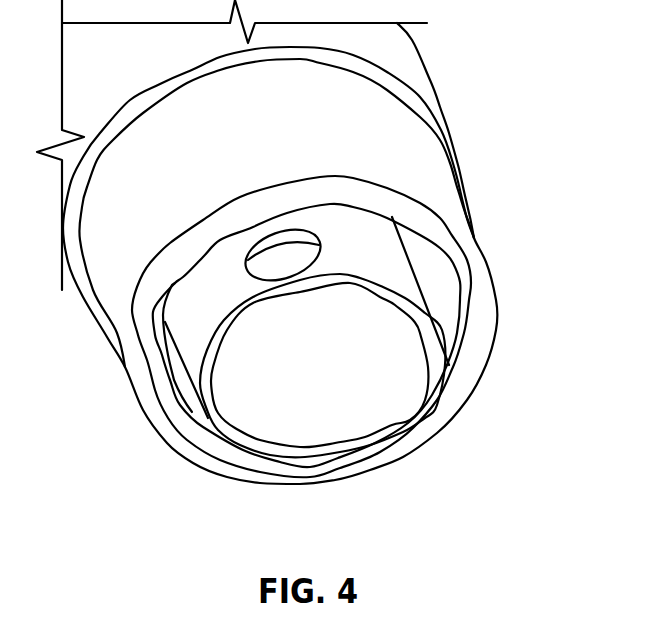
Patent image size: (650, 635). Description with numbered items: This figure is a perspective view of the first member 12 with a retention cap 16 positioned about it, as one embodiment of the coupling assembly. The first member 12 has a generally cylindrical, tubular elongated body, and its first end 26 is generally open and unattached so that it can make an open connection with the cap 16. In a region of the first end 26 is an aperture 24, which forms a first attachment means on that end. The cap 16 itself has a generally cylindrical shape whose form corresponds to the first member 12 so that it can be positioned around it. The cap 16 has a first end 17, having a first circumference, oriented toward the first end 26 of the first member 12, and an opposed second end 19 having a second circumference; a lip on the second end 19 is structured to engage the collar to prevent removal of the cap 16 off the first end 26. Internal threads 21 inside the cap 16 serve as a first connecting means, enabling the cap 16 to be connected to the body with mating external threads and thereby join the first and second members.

The first member 12 is at (194, 366).
The cap 16 is at (112, 305).
The first end 17 is at (125, 368).
The second end 19 is at (145, 100).
The internal threads 21 is at (445, 358).
The aperture 24 is at (283, 255).
The first end 26 is at (386, 288).